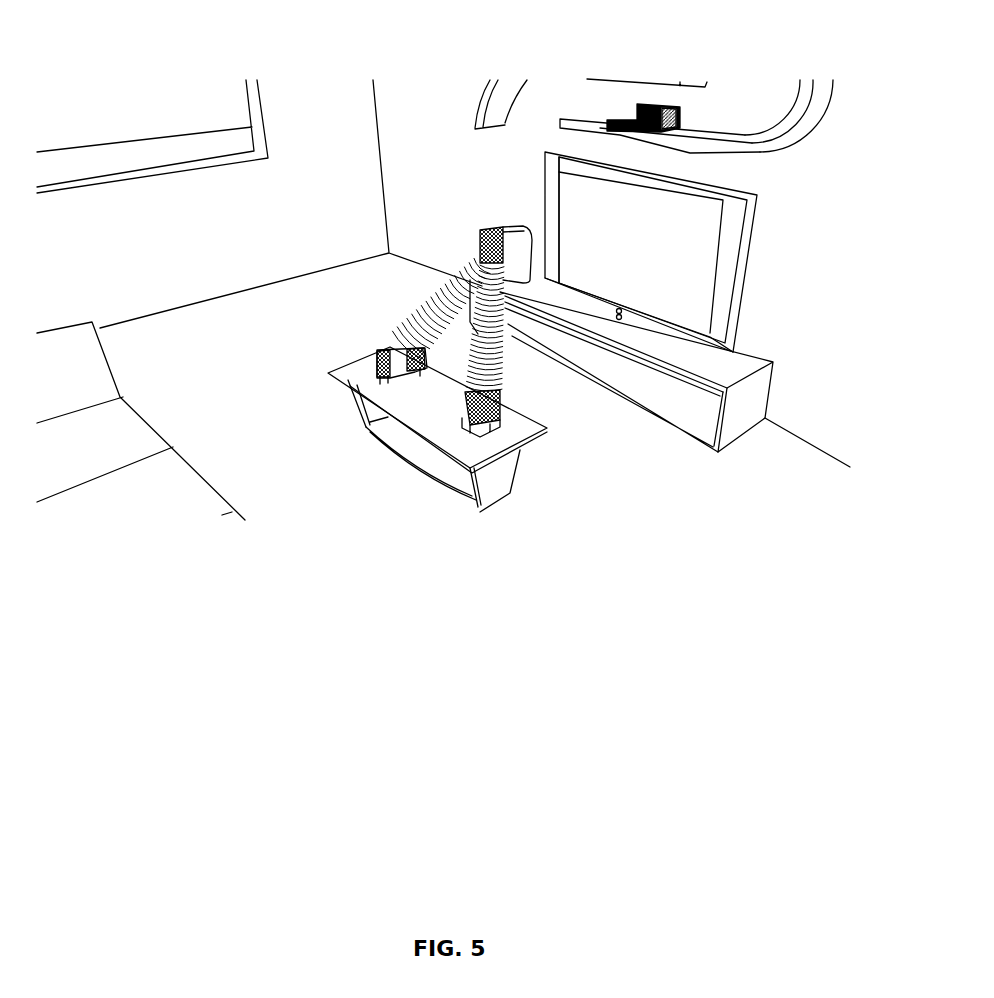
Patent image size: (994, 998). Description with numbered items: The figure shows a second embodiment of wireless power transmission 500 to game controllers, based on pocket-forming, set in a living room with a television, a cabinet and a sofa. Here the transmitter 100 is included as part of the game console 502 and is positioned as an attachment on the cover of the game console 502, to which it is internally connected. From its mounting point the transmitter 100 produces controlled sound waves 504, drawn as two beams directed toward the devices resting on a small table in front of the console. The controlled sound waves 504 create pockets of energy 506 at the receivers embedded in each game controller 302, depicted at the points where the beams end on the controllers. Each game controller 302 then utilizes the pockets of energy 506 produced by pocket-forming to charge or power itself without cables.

The wireless power transmission 500 is at (346, 112).
The transmitter 100 is at (480, 232).
The game console 502 is at (518, 227).
The controlled sound waves 504 is at (437, 302).
The pockets of energy 506 is at (378, 354).
The game controller 302 is at (350, 386).